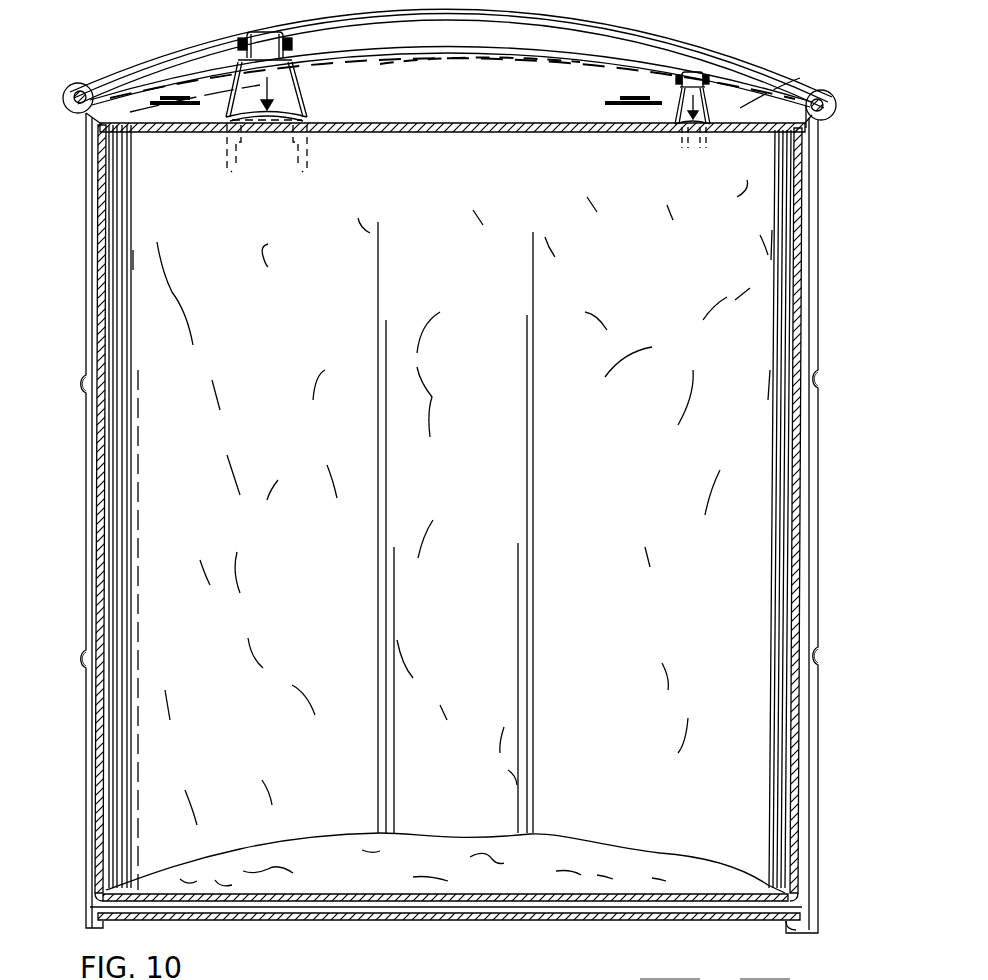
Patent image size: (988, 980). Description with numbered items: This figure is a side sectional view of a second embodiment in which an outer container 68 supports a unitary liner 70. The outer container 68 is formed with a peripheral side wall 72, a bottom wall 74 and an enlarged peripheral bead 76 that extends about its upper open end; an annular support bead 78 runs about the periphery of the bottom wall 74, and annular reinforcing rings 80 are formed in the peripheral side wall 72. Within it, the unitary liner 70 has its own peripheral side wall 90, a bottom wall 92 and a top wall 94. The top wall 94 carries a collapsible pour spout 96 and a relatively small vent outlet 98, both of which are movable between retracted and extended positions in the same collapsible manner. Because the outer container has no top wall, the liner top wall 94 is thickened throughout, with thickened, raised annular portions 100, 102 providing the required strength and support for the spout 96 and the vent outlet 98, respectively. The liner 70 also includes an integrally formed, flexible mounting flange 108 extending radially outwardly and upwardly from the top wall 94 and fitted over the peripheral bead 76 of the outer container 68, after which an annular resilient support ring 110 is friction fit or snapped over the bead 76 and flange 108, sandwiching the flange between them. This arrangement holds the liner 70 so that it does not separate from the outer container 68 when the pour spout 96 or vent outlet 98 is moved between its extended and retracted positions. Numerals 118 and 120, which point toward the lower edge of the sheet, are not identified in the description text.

The outer container 68 is at (818, 288).
The unitary liner 70 is at (560, 125).
The peripheral side wall 72 is at (818, 505).
The bottom wall 74 is at (412, 915).
The enlarged peripheral bead 76 is at (822, 130).
The annular support bead 78 is at (806, 933).
The annular reinforcing rings 80 is at (821, 378).
The peripheral side wall 90 is at (108, 352).
The bottom wall 92 is at (410, 878).
The top wall 94 is at (372, 125).
The collapsible pour spout 96 is at (317, 90).
The vent outlet 98 is at (665, 97).
The thickened raised annular portion 100 is at (198, 82).
The thickened raised annular portion 102 is at (713, 118).
The flexible mounting flange 108 is at (122, 88).
The annular resilient support ring 110 is at (837, 108).
The pallet 118 is at (760, 979).
The pallet deck 120 is at (653, 979).